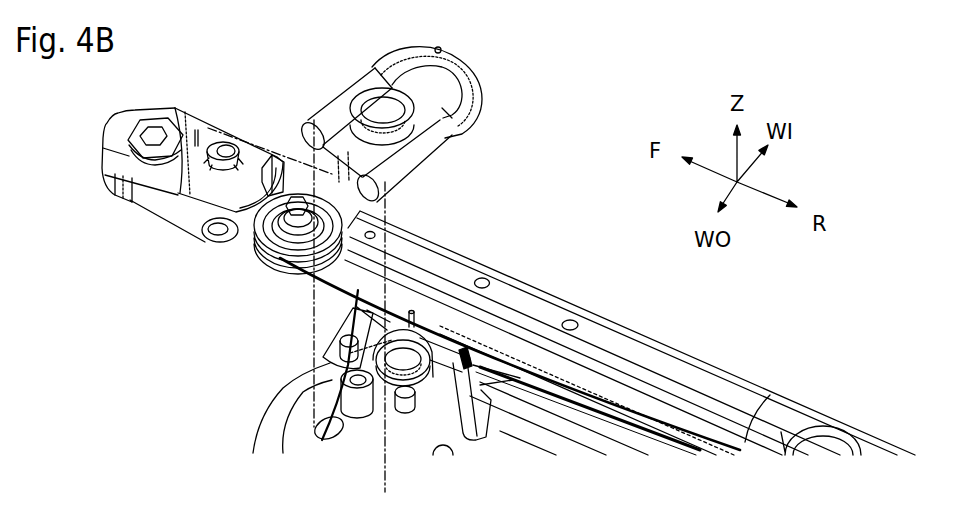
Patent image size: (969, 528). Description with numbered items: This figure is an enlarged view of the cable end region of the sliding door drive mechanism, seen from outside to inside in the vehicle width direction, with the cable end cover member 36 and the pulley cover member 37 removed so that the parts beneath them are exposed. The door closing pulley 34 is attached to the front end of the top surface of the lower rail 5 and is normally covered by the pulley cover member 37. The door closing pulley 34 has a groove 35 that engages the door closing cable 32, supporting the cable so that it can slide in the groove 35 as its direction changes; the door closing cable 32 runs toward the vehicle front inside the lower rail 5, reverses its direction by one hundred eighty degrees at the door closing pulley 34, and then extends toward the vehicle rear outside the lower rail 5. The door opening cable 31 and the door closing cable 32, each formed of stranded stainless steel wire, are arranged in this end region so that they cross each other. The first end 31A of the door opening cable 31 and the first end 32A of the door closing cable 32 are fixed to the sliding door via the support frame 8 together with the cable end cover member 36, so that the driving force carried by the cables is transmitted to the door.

The lower rail 5 is at (740, 375).
The support frame 8 is at (290, 406).
The door opening cable 31 is at (668, 422).
The first end of door opening cable 31A is at (322, 440).
The door closing cable 32 is at (320, 283).
The first end of door closing cable 32A is at (402, 408).
The door closing pulley 34 is at (288, 197).
The groove 35 is at (268, 255).
The cable end cover member 36 is at (428, 142).
The pulley cover member 37 is at (177, 112).